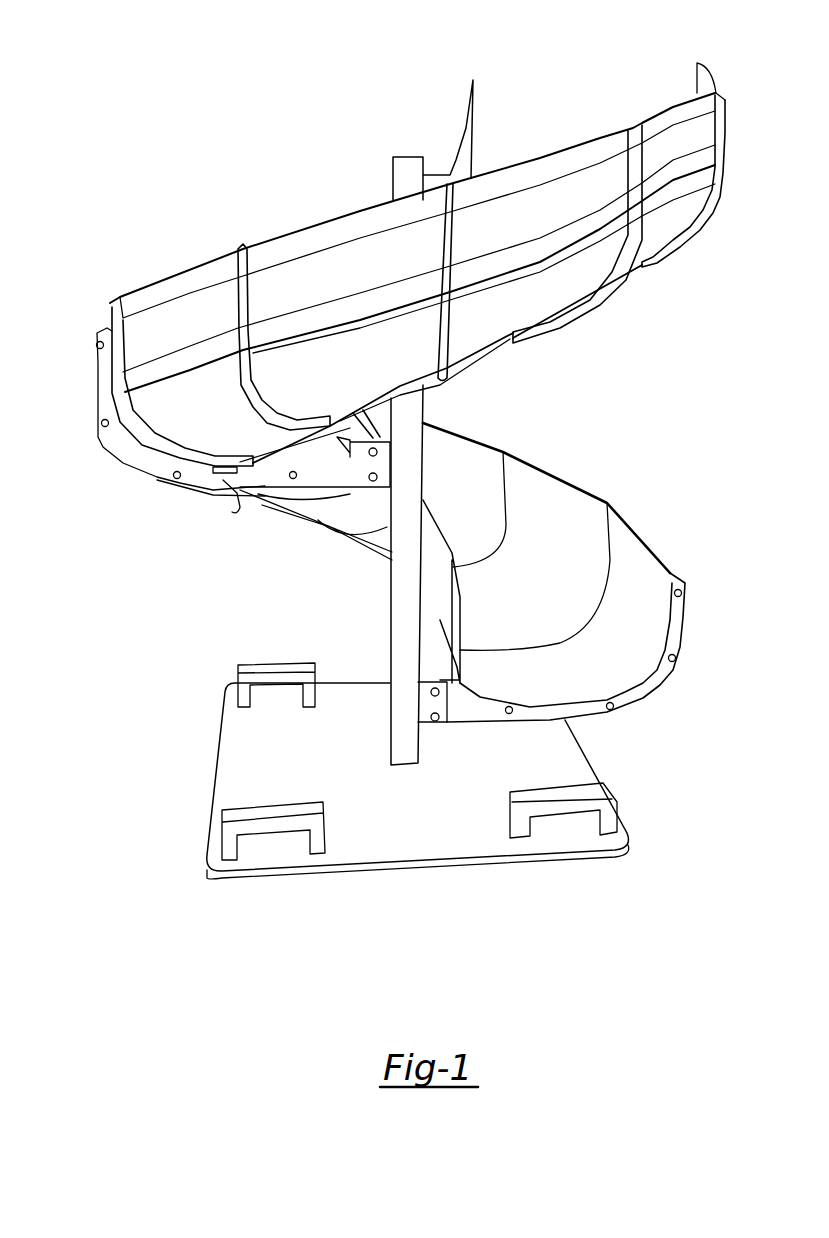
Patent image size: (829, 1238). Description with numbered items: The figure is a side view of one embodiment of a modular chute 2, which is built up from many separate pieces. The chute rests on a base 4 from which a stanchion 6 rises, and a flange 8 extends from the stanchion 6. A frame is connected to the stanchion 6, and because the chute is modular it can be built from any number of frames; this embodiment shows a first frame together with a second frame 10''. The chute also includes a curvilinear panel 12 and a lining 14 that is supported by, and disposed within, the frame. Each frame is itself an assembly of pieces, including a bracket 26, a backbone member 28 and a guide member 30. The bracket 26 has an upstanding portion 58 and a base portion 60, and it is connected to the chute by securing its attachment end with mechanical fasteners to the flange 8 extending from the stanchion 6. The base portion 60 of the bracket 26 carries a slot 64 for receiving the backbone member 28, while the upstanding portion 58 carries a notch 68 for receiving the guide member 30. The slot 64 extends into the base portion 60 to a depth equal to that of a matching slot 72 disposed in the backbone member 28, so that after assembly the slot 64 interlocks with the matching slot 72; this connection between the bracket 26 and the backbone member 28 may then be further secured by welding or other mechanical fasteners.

The modular chute 2 is at (618, 404).
The base 4 is at (270, 741).
The stanchion 6 is at (400, 157).
The flange 8 is at (427, 705).
The second frame 10'' is at (380, 310).
The curvilinear panel 12 is at (435, 563).
The lining 14 is at (541, 621).
The bracket 26 is at (115, 445).
The backbone member 28 is at (358, 540).
The guide member 30 is at (172, 285).
The upstanding portion 58 is at (100, 357).
The base portion 60 is at (187, 487).
The slot 64 is at (242, 500).
The notch 68 is at (112, 382).
The matching slot 72 is at (230, 492).